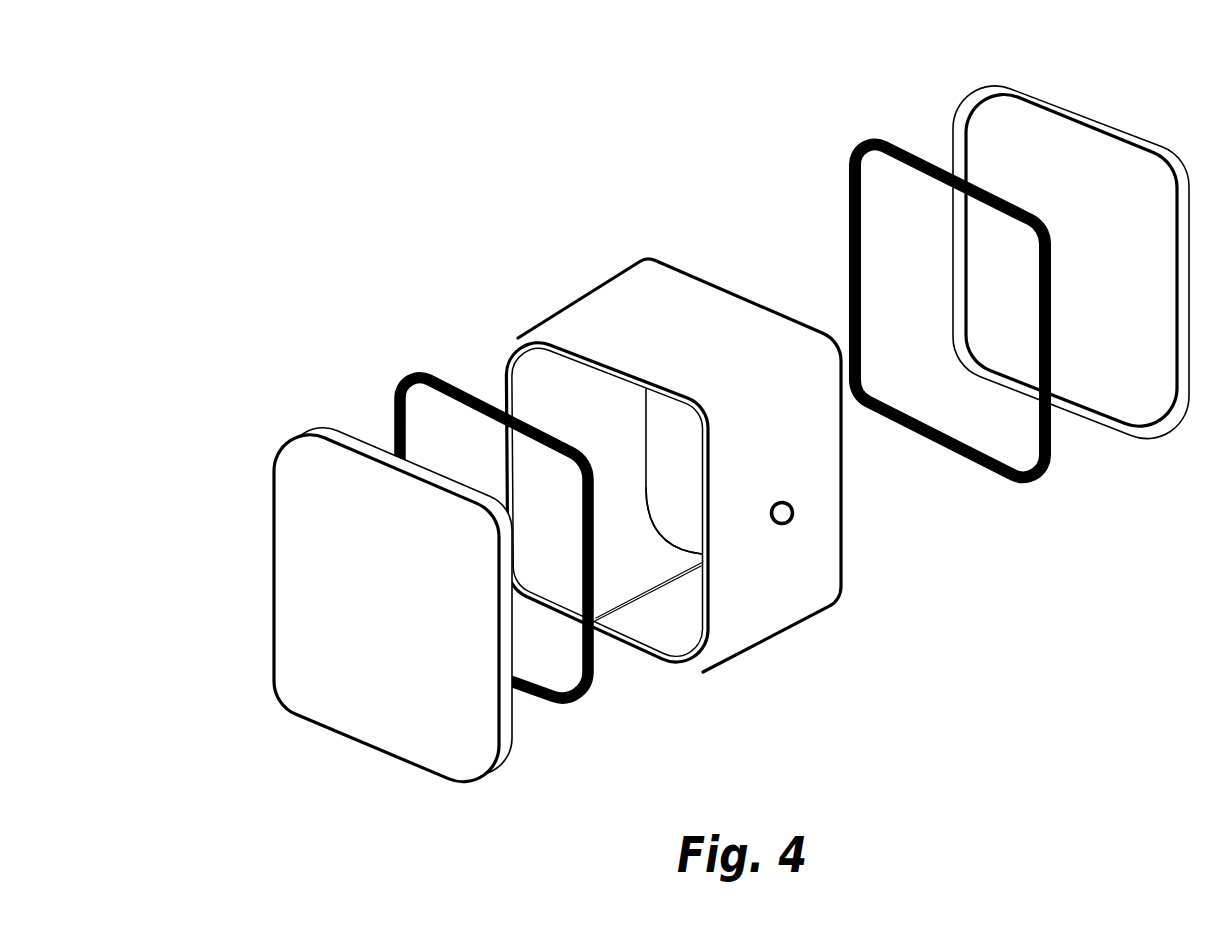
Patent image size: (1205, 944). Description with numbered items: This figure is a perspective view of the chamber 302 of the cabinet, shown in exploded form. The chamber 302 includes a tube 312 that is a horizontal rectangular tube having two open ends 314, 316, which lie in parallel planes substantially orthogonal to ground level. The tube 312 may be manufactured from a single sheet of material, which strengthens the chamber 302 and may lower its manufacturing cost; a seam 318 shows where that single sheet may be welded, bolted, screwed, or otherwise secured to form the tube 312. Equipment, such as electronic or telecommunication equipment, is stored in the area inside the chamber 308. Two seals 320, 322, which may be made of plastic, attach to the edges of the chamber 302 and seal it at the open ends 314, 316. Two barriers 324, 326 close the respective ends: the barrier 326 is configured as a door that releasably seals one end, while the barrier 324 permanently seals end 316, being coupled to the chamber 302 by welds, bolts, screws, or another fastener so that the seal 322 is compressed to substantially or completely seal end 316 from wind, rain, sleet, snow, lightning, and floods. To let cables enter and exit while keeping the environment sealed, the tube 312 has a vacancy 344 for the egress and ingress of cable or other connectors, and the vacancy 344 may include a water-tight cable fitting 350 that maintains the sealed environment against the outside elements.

The chamber 302 is at (653, 414).
The area inside the chamber 308 is at (650, 558).
The tube 312 is at (721, 493).
The open end 314 is at (508, 385).
The open end 316 is at (645, 455).
The seam 318 is at (632, 607).
The seal 320 is at (392, 412).
The seal 322 is at (838, 250).
The barrier 324 is at (922, 103).
The barrier 326 is at (232, 478).
The vacancy 344 is at (782, 513).
The water-tight cable fitting 350 is at (790, 501).